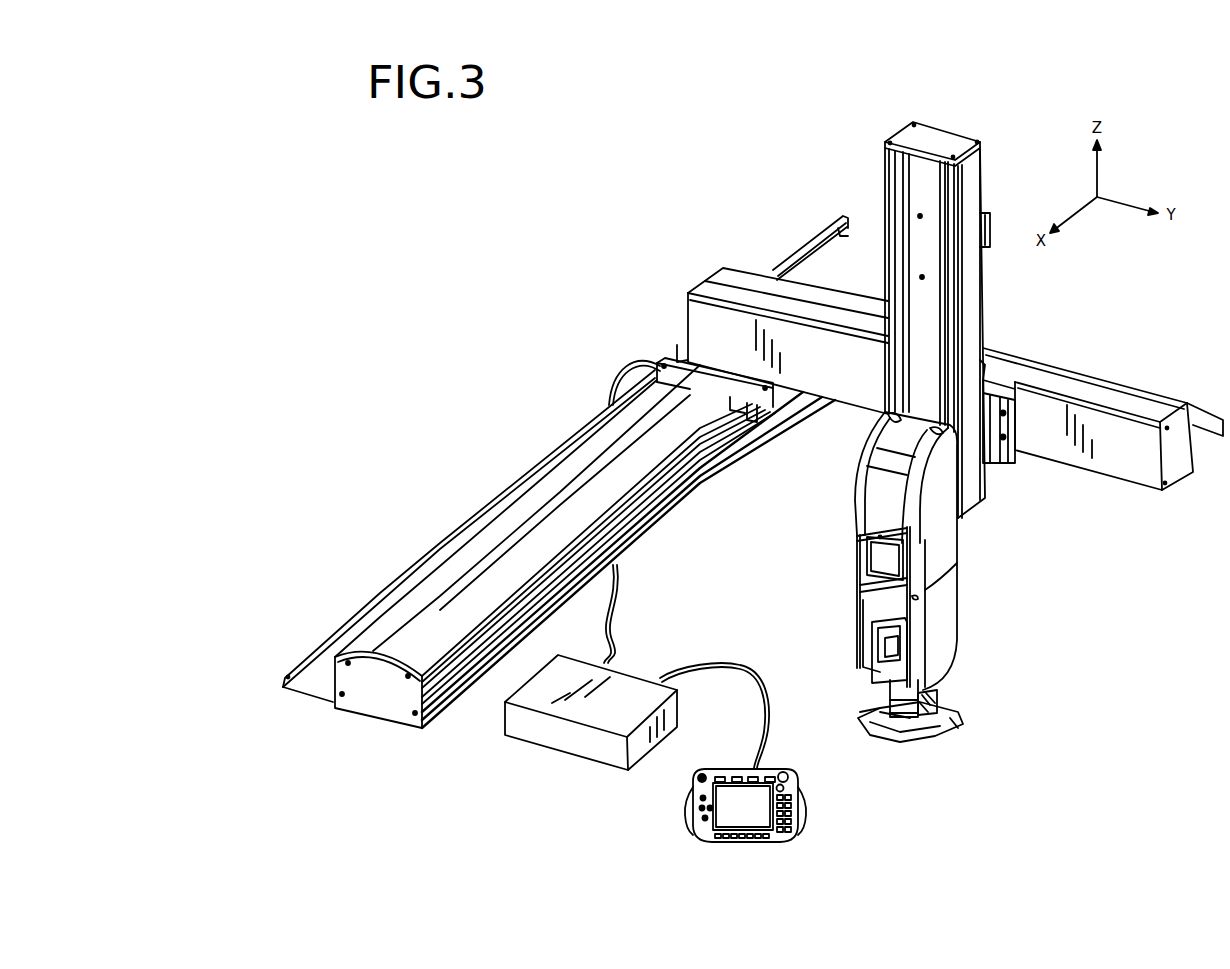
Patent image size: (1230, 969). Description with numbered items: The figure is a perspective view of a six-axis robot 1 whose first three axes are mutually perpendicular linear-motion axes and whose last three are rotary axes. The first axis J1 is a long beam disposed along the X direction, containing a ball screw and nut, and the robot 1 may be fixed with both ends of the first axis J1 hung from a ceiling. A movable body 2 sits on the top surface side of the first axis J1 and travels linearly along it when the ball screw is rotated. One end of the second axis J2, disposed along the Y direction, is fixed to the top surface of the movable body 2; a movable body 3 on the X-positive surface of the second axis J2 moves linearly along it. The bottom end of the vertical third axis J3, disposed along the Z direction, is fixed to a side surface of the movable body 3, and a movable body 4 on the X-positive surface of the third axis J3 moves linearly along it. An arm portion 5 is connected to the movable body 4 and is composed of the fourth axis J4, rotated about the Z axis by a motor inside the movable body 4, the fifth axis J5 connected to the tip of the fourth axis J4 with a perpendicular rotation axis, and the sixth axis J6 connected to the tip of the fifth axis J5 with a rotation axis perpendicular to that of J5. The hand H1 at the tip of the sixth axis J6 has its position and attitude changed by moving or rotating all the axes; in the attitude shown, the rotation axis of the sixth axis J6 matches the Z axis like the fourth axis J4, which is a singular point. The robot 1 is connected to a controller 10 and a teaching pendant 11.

The robot 1 is at (723, 208).
The movable body 2 is at (680, 352).
The movable body 3 is at (1015, 468).
The movable body 4 is at (880, 493).
The arm portion 5 is at (836, 573).
The controller 10 is at (560, 750).
The teaching pendant 11 is at (722, 767).
The first axis J1 is at (373, 705).
The second axis J2 is at (1127, 395).
The third axis J3 is at (933, 130).
The fourth axis J4 is at (950, 553).
The fifth axis J5 is at (873, 670).
The sixth axis J6 is at (937, 697).
The hand H1 is at (898, 752).